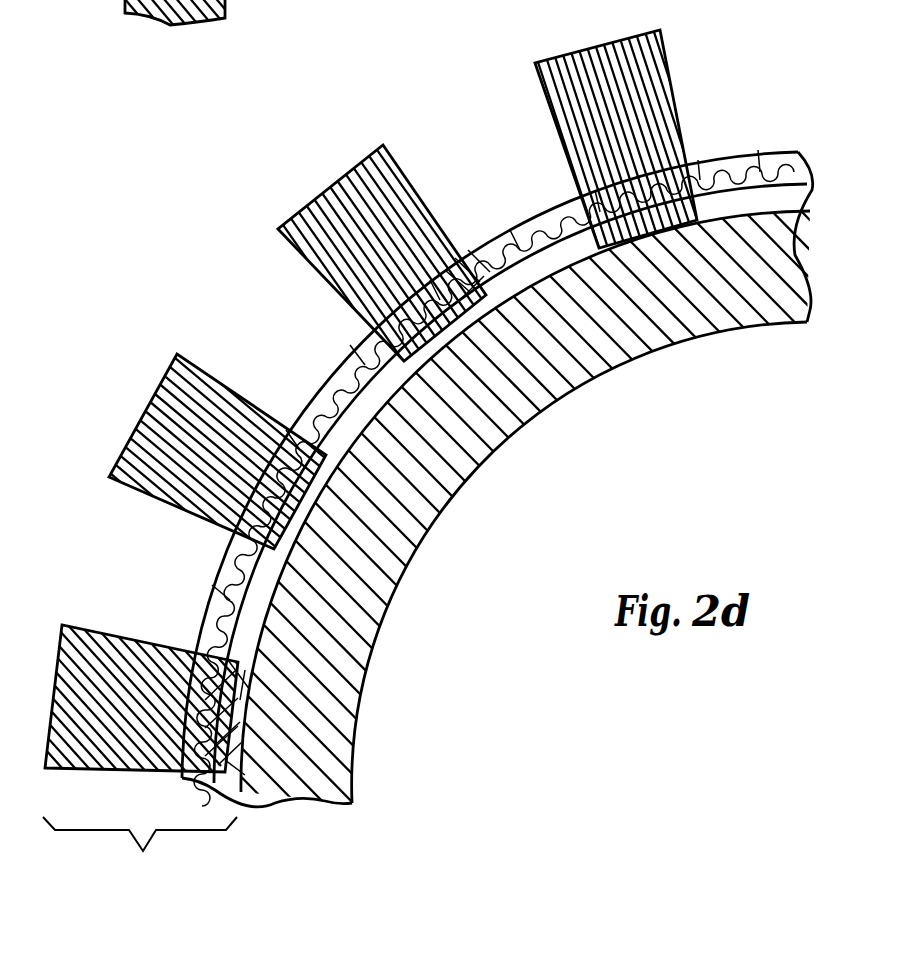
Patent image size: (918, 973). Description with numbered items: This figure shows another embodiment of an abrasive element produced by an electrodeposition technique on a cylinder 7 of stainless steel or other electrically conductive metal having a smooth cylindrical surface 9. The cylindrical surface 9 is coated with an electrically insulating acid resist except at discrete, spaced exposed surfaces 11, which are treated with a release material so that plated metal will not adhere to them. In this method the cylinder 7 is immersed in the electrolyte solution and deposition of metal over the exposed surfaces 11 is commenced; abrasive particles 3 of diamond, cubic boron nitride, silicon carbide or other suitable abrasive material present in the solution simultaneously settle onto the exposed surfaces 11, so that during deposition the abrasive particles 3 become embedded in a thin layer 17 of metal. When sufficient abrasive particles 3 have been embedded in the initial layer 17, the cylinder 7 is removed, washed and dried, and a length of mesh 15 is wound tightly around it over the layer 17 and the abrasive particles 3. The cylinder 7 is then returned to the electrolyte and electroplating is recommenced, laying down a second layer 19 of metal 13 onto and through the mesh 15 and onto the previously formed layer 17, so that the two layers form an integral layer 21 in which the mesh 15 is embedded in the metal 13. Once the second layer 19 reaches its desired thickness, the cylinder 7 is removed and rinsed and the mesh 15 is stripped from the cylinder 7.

The abrasive particles 3 is at (250, 683).
The cylinder 7 is at (438, 492).
The cylindrical surface 9 is at (812, 194).
The exposed surfaces 11 is at (667, 152).
The metal 13 is at (83, 638).
The mesh 15 is at (318, 392).
The thin layer of metal 17 is at (237, 733).
The second layer of metal 19 is at (438, 232).
The integral layer 21 is at (140, 852).